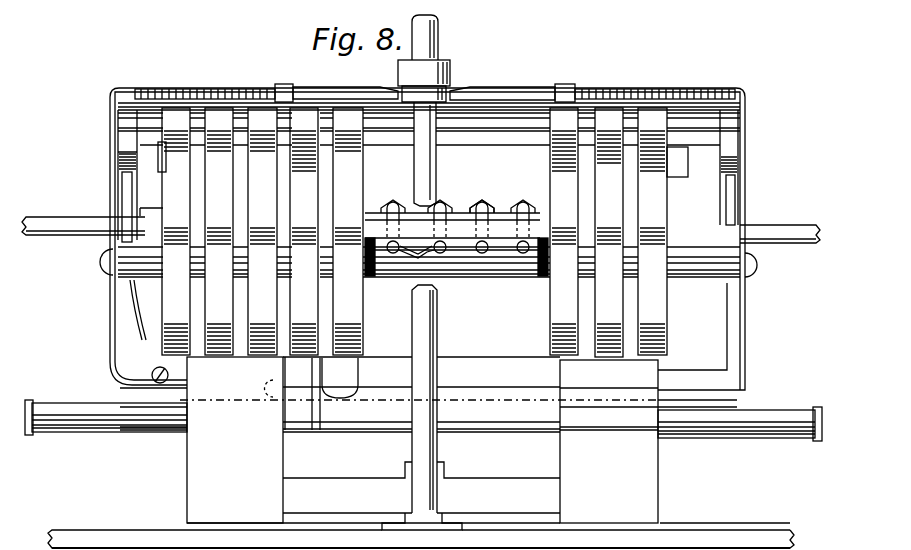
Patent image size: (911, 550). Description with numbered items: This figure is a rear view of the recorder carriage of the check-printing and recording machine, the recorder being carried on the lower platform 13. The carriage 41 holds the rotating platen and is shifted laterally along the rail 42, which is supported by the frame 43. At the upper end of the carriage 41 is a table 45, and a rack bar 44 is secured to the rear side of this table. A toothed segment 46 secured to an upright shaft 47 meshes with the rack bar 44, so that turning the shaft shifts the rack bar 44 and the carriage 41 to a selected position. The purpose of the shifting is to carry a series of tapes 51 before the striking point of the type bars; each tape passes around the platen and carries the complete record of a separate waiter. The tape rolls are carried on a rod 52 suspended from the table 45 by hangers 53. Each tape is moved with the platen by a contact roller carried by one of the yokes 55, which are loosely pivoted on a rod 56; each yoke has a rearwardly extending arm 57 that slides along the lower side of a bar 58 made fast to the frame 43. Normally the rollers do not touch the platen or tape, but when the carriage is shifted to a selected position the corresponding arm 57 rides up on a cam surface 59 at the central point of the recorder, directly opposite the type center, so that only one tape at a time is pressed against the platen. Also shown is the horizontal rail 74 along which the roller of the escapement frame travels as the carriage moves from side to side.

The lower platform 13 is at (695, 536).
The carriage 41 is at (738, 350).
The rail 42 is at (163, 430).
The frame 43 is at (660, 467).
The rack bar 44 is at (222, 92).
The table 45 is at (738, 118).
The toothed segment 46 is at (536, 92).
The upright shaft 47 is at (438, 332).
The tapes 51 is at (262, 355).
The rod 52 is at (526, 266).
The hangers 53 is at (758, 170).
The yokes 55 is at (486, 205).
The rod 56 is at (374, 207).
The arm 57 is at (443, 252).
The bar 58 is at (80, 222).
The cam surface 59 is at (418, 256).
The horizontal rail 74 is at (742, 407).